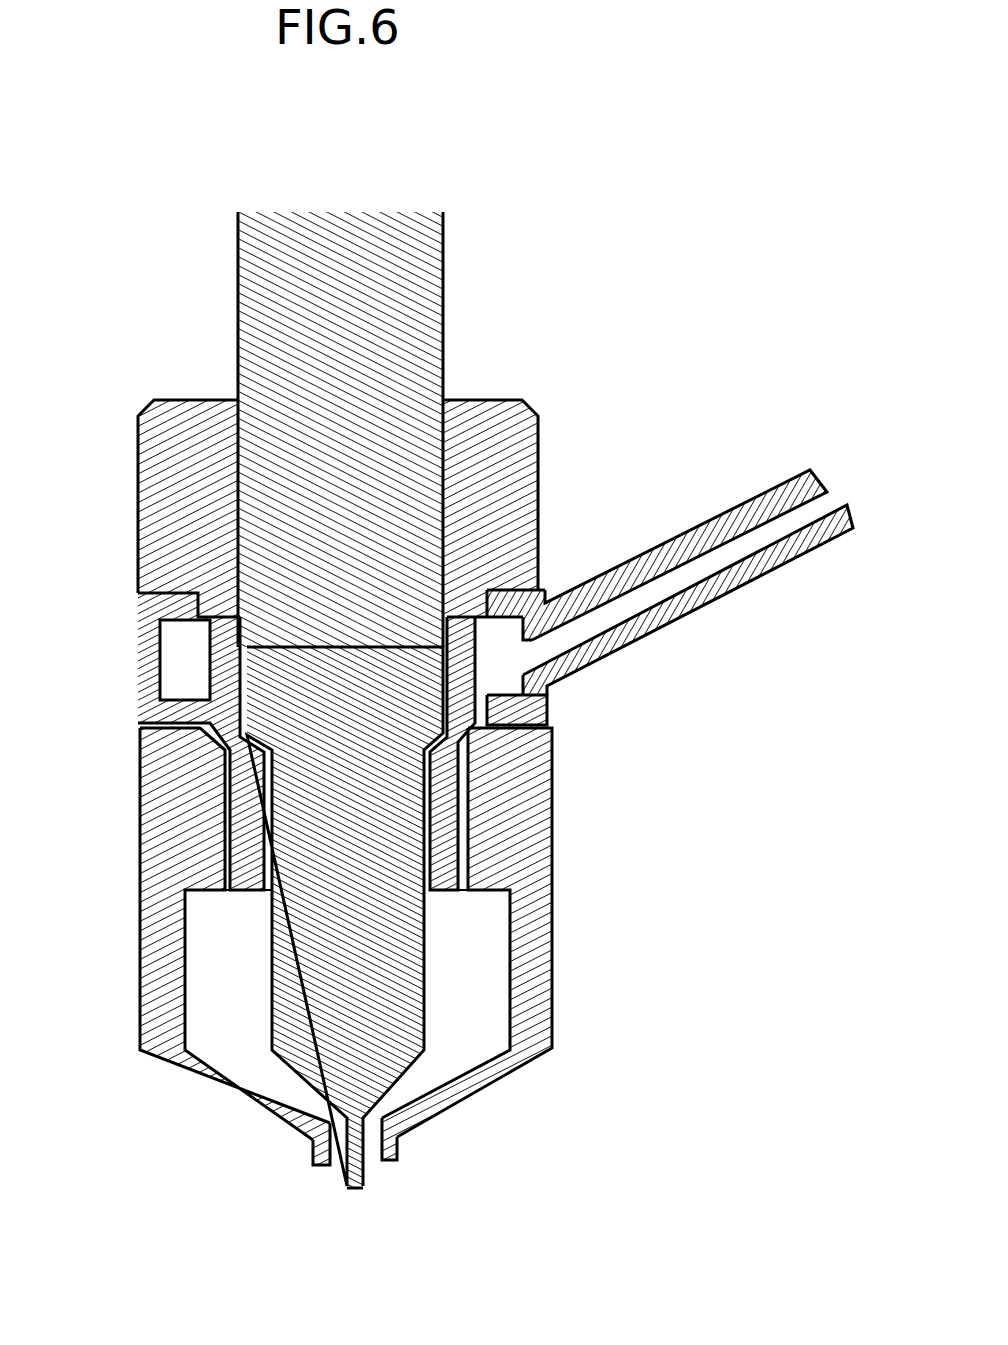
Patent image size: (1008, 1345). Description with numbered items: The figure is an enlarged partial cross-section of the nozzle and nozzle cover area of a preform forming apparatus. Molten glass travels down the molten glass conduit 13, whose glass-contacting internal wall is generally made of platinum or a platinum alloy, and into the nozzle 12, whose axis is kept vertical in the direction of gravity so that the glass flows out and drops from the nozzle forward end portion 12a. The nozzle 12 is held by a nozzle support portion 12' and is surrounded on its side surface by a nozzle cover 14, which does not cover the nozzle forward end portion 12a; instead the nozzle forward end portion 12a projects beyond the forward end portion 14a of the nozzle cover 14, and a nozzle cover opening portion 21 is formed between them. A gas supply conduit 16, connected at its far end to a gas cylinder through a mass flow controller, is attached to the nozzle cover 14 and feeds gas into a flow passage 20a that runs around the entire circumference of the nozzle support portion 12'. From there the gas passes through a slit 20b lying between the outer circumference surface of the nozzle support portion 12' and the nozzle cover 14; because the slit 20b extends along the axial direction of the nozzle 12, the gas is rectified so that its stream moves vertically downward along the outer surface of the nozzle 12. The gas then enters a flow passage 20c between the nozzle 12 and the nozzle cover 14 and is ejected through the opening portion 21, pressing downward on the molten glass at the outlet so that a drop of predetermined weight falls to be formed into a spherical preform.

The nozzle 12 is at (231, 917).
The nozzle forward end portion 12a is at (357, 1192).
The nozzle support portion 12' is at (398, 508).
The molten glass conduit 13 is at (238, 292).
The nozzle cover 14 is at (554, 1023).
The forward end portion of the nozzle cover 14a is at (312, 1148).
The gas supply conduit 16 is at (687, 532).
The flow passage 20a is at (548, 707).
The slit 20b is at (534, 800).
The flow passage 20c is at (490, 928).
The nozzle cover opening portion 21 is at (373, 1163).